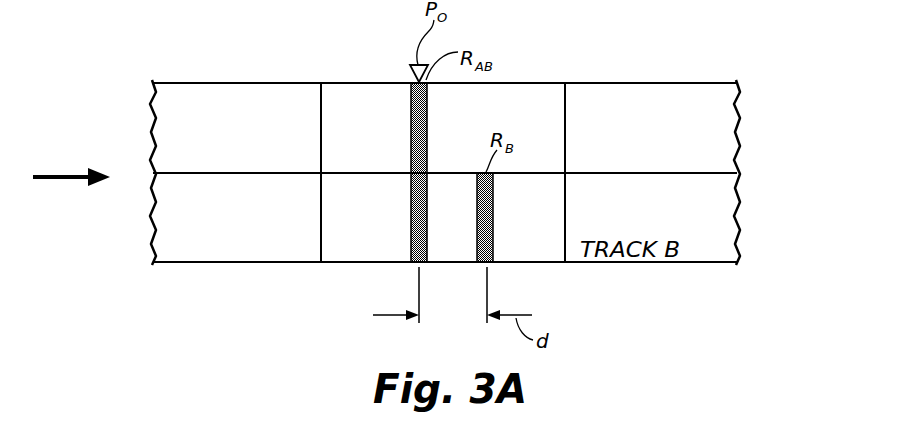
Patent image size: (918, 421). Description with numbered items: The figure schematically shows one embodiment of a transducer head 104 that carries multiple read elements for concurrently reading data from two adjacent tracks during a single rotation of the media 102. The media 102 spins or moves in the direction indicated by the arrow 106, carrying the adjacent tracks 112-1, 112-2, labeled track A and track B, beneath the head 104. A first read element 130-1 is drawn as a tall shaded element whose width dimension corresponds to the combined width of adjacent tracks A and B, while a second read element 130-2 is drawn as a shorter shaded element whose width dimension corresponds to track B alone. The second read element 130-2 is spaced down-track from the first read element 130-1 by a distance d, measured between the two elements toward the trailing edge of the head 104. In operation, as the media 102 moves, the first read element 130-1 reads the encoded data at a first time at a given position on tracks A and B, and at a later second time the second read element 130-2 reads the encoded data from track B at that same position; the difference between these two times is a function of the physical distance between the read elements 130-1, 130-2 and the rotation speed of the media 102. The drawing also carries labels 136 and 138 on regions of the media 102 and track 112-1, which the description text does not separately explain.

The media 102 is at (260, 228).
The head 104 is at (389, 143).
The arrow 106 is at (55, 172).
The adjacent track 112-1 is at (706, 130).
The adjacent track 112-2 is at (706, 226).
The first read element 130-1 is at (428, 113).
The second read element 130-2 is at (494, 236).
The media region 136 is at (321, 136).
The track region 138 is at (565, 104).